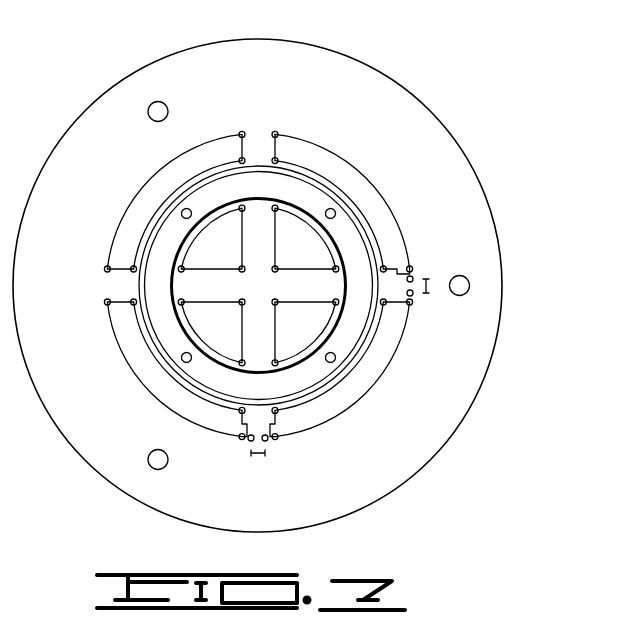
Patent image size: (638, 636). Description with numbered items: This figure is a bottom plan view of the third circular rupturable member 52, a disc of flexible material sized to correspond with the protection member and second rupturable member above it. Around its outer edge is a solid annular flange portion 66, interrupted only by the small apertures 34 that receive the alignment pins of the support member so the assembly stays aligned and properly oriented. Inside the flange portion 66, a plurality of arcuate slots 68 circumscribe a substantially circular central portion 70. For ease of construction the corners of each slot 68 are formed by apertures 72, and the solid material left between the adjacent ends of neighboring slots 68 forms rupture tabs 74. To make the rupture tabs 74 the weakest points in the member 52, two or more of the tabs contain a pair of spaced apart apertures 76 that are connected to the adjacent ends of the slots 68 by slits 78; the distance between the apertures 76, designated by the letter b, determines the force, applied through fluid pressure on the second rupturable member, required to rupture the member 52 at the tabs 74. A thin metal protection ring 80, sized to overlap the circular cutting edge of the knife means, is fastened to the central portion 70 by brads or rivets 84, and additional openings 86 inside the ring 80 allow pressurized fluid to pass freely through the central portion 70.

The apertures 34 is at (165, 101).
The third circular rupturable member 52 is at (448, 158).
The annular flange portion 66 is at (365, 503).
The arcuate slots 68 is at (156, 179).
The central portion 70 is at (332, 188).
The apertures 72 is at (107, 266).
The rupture tabs 74 is at (268, 156).
The apertures 76 is at (249, 442).
The slits 78 is at (400, 274).
The thin metal protection ring 80 is at (338, 143).
The brads or rivets 84 is at (190, 208).
The openings 86 is at (275, 236).
The distance between the apertures b is at (252, 457).